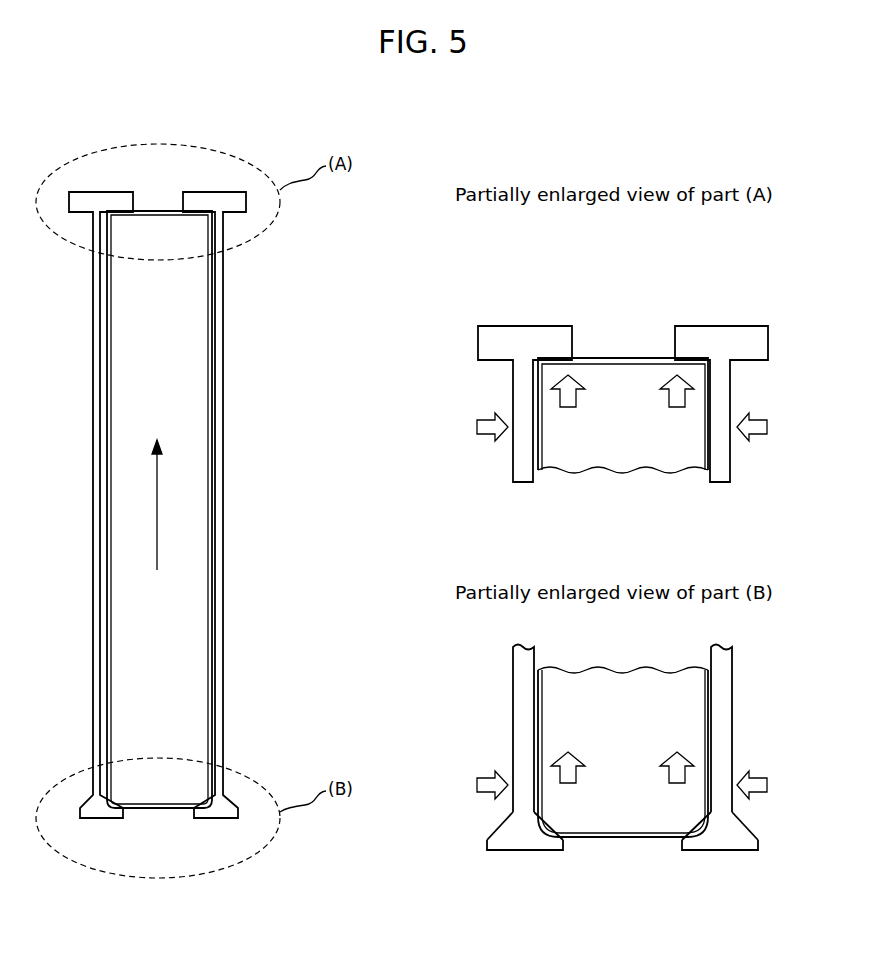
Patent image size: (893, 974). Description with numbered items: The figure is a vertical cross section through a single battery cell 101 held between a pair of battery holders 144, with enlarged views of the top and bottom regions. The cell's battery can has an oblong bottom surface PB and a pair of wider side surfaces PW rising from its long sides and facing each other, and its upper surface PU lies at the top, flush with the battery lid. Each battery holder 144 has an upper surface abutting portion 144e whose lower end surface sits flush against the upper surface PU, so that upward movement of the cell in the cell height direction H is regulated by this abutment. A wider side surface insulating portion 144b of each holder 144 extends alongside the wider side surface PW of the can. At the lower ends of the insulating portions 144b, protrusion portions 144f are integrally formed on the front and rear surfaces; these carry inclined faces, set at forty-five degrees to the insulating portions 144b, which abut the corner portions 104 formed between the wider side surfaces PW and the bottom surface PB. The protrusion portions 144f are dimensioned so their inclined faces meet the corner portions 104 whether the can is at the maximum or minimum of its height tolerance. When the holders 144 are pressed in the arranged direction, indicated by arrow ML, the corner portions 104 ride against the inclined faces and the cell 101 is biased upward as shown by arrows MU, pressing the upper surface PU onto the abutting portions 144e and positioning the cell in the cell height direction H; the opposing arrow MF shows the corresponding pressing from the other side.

The battery holder 144 is at (93, 368).
The upper surface abutting portion 144e is at (556, 338).
The wider side surface insulating portion 144b is at (520, 677).
The protrusion portion 144f is at (560, 840).
The corner portion 104 is at (548, 832).
The single battery cell 101 is at (187, 429).
The upper surface PU is at (155, 210).
The bottom surface PB is at (158, 809).
The wider side surface PW is at (107, 504).
The cell height direction H is at (164, 505).
The upward biasing direction MU is at (574, 400).
The pressing direction in arranged direction ML is at (478, 420).
The movement direction of force MF is at (768, 420).